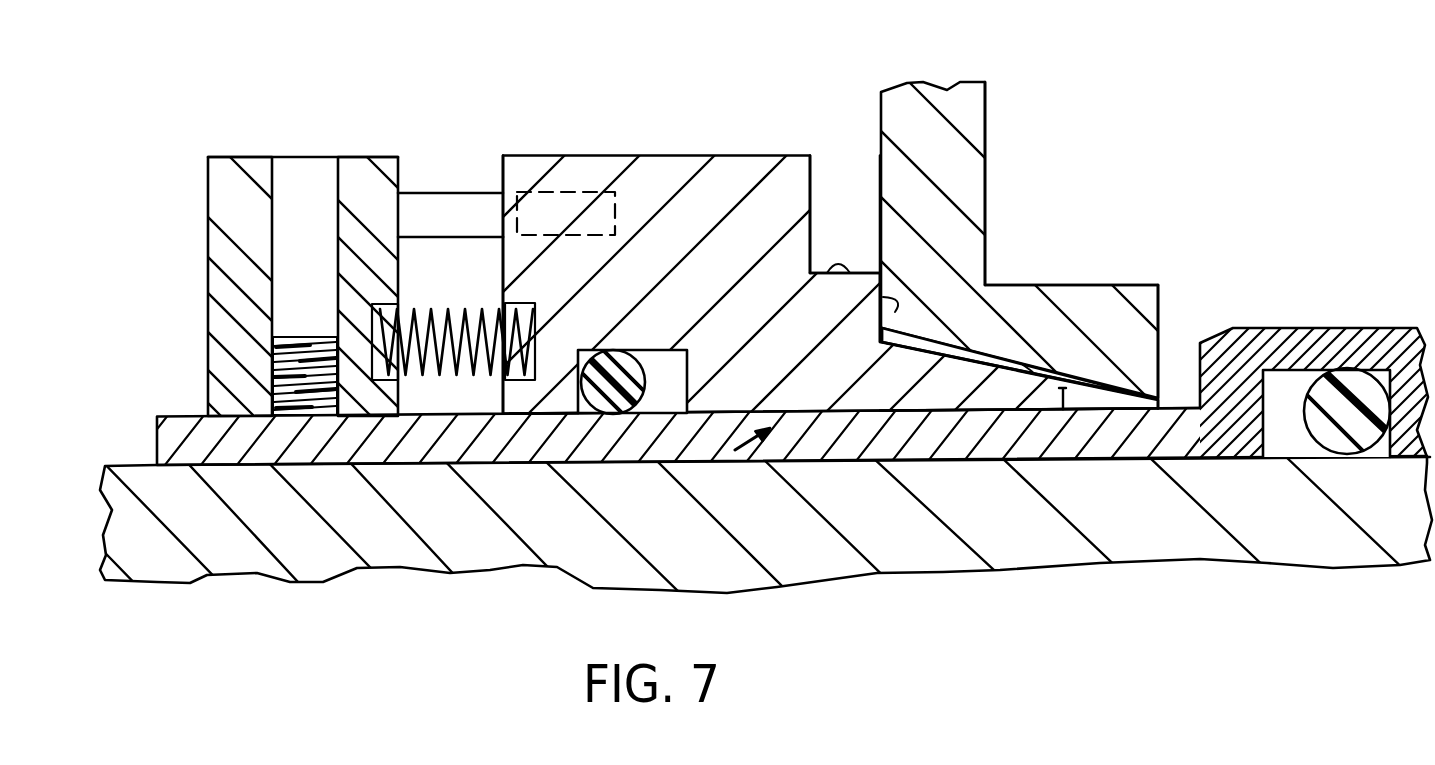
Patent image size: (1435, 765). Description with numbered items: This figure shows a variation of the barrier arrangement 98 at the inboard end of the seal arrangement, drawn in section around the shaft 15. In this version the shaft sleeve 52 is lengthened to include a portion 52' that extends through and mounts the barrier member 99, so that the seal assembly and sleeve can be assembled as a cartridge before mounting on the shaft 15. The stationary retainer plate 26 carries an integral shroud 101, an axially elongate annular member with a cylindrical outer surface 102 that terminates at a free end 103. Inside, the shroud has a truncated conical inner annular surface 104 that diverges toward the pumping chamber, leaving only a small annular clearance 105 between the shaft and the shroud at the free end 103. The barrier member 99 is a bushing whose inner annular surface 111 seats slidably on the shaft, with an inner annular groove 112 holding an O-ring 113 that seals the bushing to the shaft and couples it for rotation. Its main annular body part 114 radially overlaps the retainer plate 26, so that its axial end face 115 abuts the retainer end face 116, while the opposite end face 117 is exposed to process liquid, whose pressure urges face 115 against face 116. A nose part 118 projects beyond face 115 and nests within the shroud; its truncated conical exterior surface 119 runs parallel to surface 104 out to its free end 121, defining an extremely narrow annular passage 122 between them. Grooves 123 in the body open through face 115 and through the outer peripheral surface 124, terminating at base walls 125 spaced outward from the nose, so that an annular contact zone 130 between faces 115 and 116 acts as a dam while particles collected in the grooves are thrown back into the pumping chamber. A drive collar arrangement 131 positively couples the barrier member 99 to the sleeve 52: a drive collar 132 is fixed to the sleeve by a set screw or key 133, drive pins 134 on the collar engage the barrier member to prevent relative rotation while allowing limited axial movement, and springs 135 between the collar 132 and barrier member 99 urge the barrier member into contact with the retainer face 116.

The shaft 15 is at (1163, 543).
The retainer plate 26 is at (970, 130).
The shaft sleeve 52 is at (1259, 349).
The portion of shaft sleeve 52' is at (777, 517).
The barrier arrangement 98 is at (740, 445).
The barrier member 99 is at (505, 178).
The shroud 101 is at (984, 308).
The cylindrical outer surface 102 is at (1113, 286).
The free end 103 is at (1160, 310).
The inner annular surface 104 is at (1060, 385).
The annular clearance 105 is at (1163, 403).
The inner annular surface 111 is at (540, 410).
The inner annular groove 112 is at (672, 365).
The O-ring 113 is at (598, 400).
The main annular body part 114 is at (533, 250).
The axial end face 115 is at (878, 340).
The end face 116 is at (880, 173).
The end face 117 is at (503, 397).
The nose part 118 is at (927, 383).
The exterior surface 119 is at (1072, 396).
The free end 121 is at (1075, 393).
The passage 122 is at (1013, 365).
The grooves 123 is at (806, 180).
The outer peripheral surface 124 is at (673, 156).
The base walls 125 is at (830, 273).
The contact zone 130 is at (884, 292).
The drive collar arrangement 131 is at (315, 222).
The drive collar 132 is at (223, 285).
The set screw or key 133 is at (300, 383).
The drive pins 134 is at (437, 200).
The springs 135 is at (440, 310).